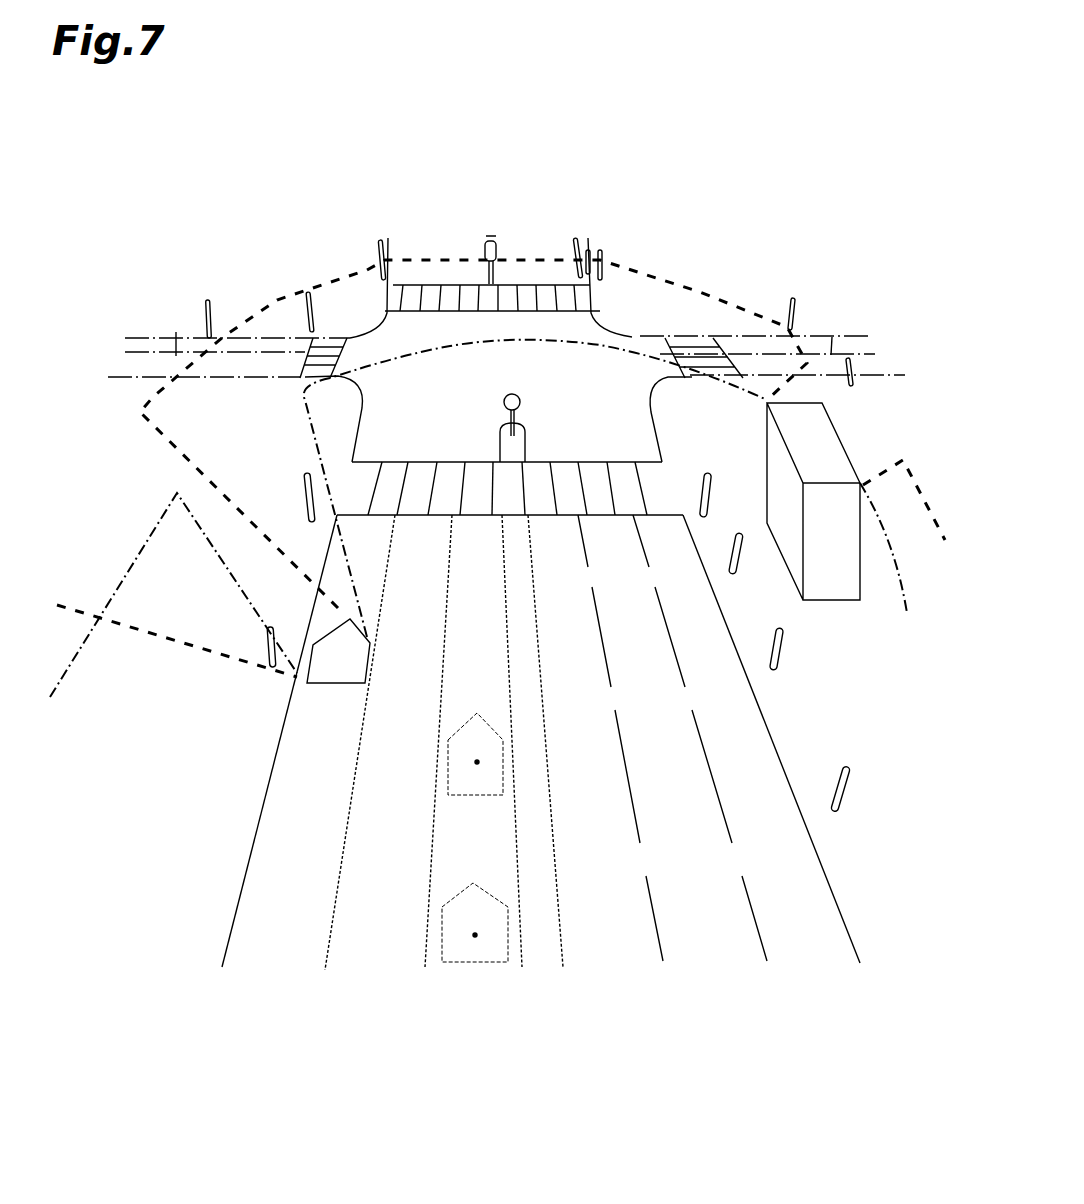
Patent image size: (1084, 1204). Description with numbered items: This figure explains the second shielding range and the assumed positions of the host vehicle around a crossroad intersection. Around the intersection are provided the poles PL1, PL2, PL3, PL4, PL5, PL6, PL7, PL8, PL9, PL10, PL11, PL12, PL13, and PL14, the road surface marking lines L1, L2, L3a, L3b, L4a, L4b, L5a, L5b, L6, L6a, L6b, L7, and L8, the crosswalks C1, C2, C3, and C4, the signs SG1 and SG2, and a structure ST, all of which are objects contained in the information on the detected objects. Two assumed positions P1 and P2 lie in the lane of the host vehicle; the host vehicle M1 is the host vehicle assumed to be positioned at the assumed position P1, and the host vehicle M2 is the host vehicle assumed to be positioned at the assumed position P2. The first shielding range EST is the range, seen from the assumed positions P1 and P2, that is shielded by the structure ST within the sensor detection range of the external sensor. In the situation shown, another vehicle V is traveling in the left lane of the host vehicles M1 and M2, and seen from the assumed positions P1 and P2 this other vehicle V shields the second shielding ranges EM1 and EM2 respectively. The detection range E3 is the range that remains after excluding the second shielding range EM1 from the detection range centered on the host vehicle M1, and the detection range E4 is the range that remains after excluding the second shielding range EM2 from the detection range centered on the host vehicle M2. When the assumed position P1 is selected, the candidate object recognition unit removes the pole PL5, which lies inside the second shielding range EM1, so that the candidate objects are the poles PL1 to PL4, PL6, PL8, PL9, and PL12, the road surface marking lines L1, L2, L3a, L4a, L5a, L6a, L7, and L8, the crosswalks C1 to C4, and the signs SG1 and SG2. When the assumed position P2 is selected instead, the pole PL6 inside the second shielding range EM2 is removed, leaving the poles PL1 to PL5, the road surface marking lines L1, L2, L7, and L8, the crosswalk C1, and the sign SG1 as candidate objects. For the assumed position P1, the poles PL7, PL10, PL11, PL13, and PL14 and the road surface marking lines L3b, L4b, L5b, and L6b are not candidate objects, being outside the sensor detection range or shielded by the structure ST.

The crosswalk C1 is at (430, 462).
The crosswalk C2 is at (351, 361).
The crosswalk C3 is at (527, 312).
The crosswalk C4 is at (656, 360).
The sign SG1 is at (512, 394).
The sign SG2 is at (490, 238).
The pole PL1 is at (707, 472).
The pole PL2 is at (739, 532).
The pole PL3 is at (779, 627).
The pole PL4 is at (846, 766).
The pole PL5 is at (268, 643).
The pole PL6 is at (305, 473).
The pole PL7 is at (209, 300).
The pole PL8 is at (309, 292).
The pole PL9 is at (380, 252).
The pole PL10 is at (580, 237).
The pole PL11 is at (590, 250).
The pole PL12 is at (603, 256).
The pole PL13 is at (795, 298).
The pole PL14 is at (851, 386).
The road surface marking line L1 is at (424, 935).
The road surface marking line L2 is at (330, 935).
The road surface marking line L3a is at (265, 350).
The road surface marking line L3b is at (176, 332).
The road surface marking line L4a is at (438, 242).
The road surface marking line L4b is at (437, 282).
The road surface marking line L5a is at (515, 282).
The road surface marking line L5b is at (542, 282).
The road surface marking line L6 is at (897, 237).
The road surface marking line L6a is at (800, 338).
The road surface marking line L6b is at (835, 336).
The road surface marking line L7 is at (770, 980).
The road surface marking line L8 is at (665, 980).
The detection range E3 is at (138, 412).
The detection range E4 is at (148, 528).
The second shielding range EM1 is at (200, 599).
The second shielding range EM2 is at (296, 515).
The first shielding range EST is at (900, 460).
The structure ST is at (862, 600).
The other vehicle V is at (338, 688).
The host vehicle M1 is at (447, 762).
The host vehicle M2 is at (443, 908).
The assumed position P1 is at (477, 766).
The assumed position P2 is at (475, 939).